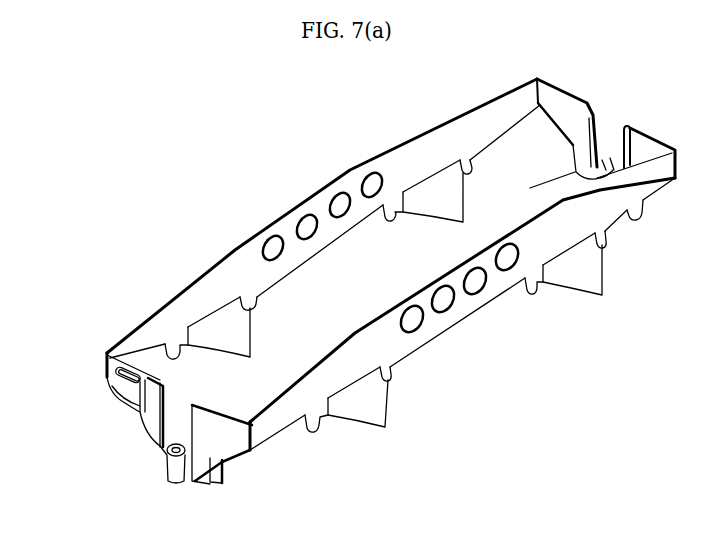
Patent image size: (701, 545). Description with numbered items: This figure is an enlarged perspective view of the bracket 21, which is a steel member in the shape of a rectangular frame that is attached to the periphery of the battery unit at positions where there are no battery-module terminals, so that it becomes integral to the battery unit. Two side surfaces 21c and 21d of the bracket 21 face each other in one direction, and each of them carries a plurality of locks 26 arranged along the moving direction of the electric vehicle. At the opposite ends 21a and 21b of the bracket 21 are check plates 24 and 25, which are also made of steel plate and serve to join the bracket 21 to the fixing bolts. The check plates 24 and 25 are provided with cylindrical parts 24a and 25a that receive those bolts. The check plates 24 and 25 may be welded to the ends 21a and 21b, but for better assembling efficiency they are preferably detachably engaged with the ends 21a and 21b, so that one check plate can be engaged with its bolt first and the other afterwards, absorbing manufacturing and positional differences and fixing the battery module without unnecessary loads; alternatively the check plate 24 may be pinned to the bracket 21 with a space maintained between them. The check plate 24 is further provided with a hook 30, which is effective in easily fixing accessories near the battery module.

The bracket 21 is at (125, 227).
The end of bracket 21a is at (112, 370).
The end of bracket 21b is at (562, 88).
The side surface 21c is at (262, 229).
The side surface 21d is at (467, 302).
The check plate 24 is at (153, 438).
The cylindrical part 24a is at (178, 470).
The check plate 25 is at (597, 167).
The cylindrical part 25a is at (603, 168).
The locks 26 is at (404, 308).
The hook 30 is at (132, 397).